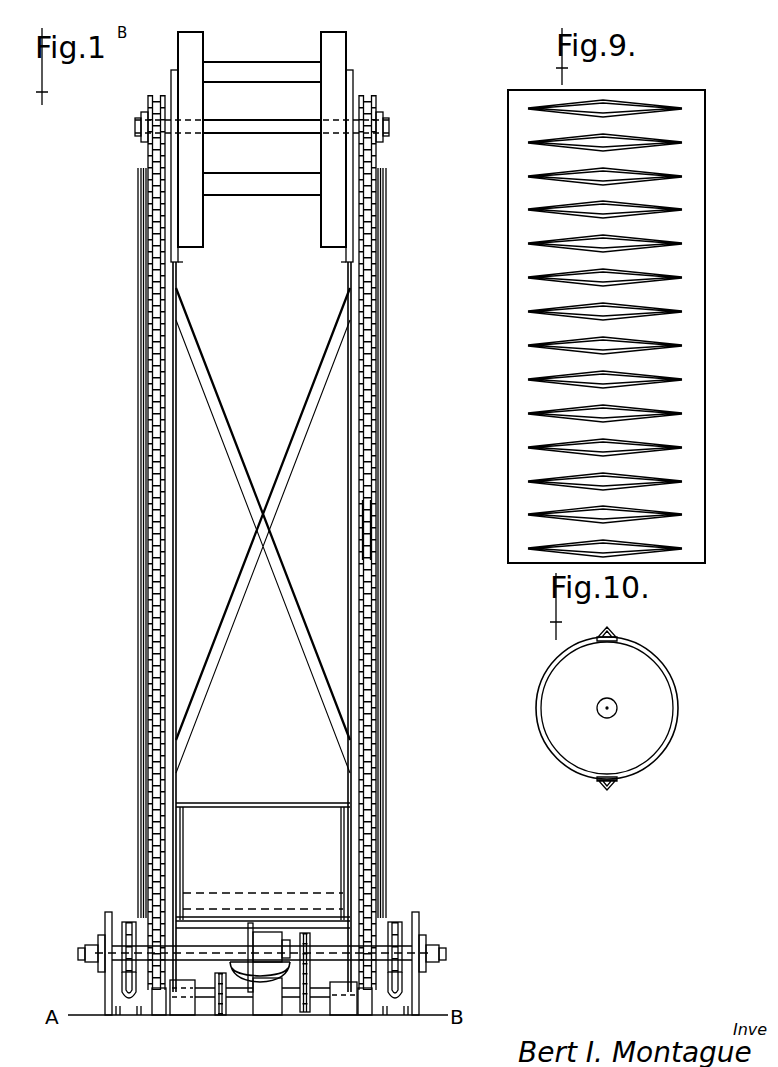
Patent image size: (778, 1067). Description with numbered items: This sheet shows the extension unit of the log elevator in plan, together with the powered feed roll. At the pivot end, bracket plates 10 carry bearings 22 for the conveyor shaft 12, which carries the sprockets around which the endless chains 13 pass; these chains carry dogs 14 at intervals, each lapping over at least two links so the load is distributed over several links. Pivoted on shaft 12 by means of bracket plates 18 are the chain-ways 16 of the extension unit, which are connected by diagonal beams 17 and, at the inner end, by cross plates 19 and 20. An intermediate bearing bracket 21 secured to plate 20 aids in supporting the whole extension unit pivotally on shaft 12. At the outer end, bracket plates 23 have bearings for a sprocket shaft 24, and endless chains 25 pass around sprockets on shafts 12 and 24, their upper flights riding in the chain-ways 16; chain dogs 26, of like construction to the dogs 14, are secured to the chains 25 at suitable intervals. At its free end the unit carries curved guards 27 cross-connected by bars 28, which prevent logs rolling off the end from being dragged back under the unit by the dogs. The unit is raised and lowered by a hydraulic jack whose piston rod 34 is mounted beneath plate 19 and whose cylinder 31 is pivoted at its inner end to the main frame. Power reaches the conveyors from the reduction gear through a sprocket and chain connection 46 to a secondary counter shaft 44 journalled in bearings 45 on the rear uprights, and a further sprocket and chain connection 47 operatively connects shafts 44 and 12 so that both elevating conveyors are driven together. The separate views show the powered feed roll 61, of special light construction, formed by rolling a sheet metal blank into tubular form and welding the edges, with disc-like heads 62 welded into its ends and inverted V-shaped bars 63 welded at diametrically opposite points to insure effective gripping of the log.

In FIG. 1B, the bracket plate 10 is at (106, 915).
In FIG. 1B, the conveyor shaft 12 is at (203, 956).
In FIG. 1B, the endless chain 13 is at (123, 925).
In FIG. 1B, the chain dog 14 is at (128, 985).
In FIG. 1B, the chain-way 16 is at (173, 522).
In FIG. 1B, the diagonal beam 17 is at (292, 598).
In FIG. 1B, the bracket plate 18 is at (183, 832).
In FIG. 1B, the cross plate 19 is at (262, 811).
In FIG. 1B, the cross plate 20 is at (281, 920).
In FIG. 1B, the intermediate bearing bracket 21 is at (251, 992).
In FIG. 1B, the bearing 22 is at (92, 942).
In FIG. 1B, the bracket plate 23 is at (172, 77).
In FIG. 1B, the sprocket shaft 24 is at (253, 128).
In FIG. 1B, the endless chain 25 is at (367, 545).
In FIG. 1B, the chain dog 26 is at (372, 580).
In FIG. 1B, the curved guard 27 is at (202, 222).
In FIG. 1B, the bar 28 is at (253, 68).
In FIG. 1B, the cylinder 31 is at (273, 1005).
In FIG. 1B, the piston rod 34 is at (263, 925).
In FIG. 1B, the secondary counter shaft 44 is at (318, 991).
In FIG. 1B, the bearing 45 is at (186, 1013).
In FIG. 1B, the sprocket and chain connection 46 is at (221, 1013).
In FIG. 1B, the sprocket and chain connection 47 is at (310, 1012).
In FIG. 9, the powered feed roll 61 is at (700, 446).
In FIG. 10, the powered feed roll 61 is at (676, 688).
In FIG. 10, the disc-like head 62 is at (656, 706).
In FIG. 10, the inverted V-shaped bar 63 is at (611, 641).